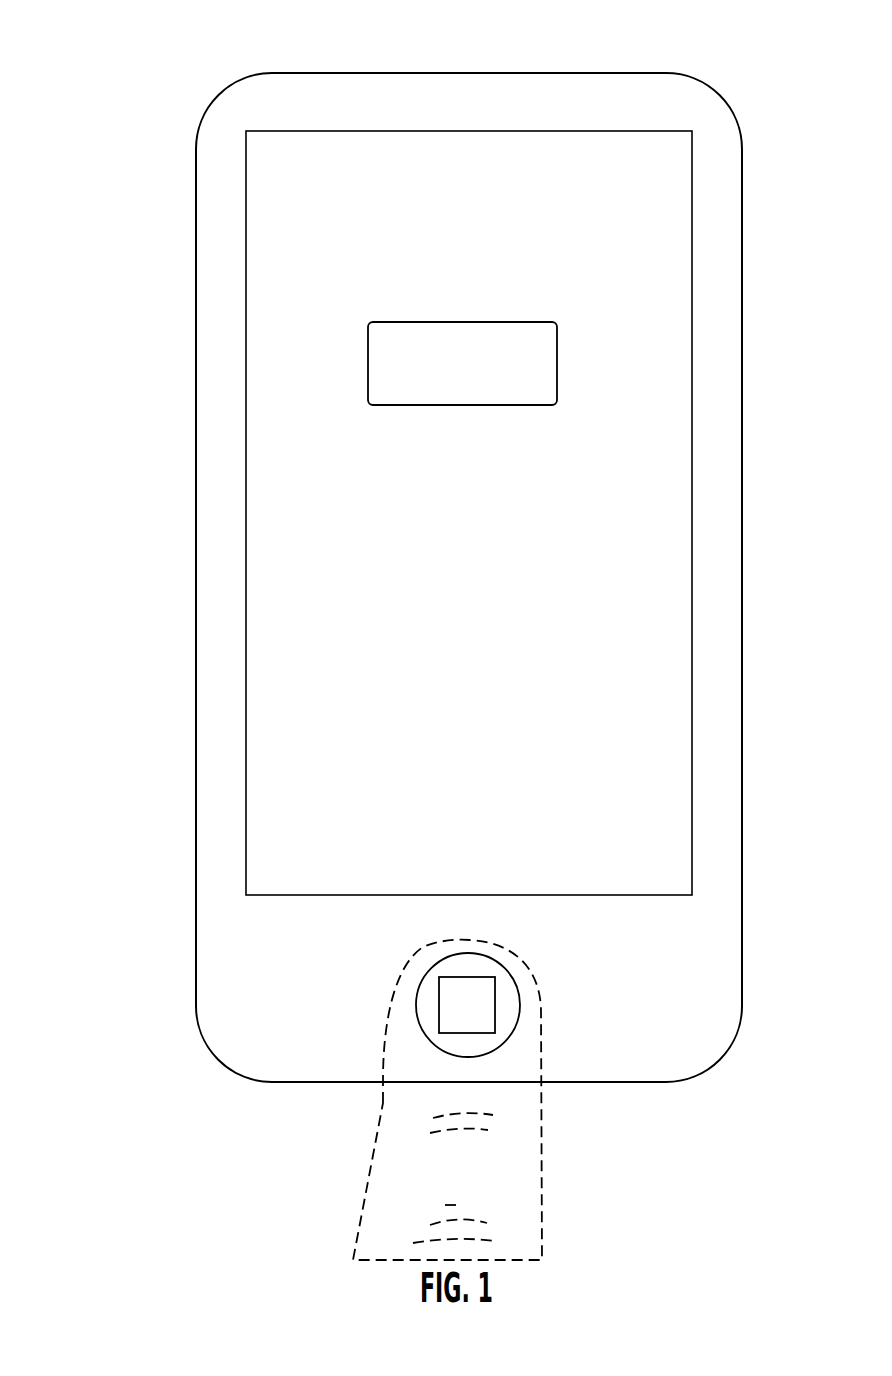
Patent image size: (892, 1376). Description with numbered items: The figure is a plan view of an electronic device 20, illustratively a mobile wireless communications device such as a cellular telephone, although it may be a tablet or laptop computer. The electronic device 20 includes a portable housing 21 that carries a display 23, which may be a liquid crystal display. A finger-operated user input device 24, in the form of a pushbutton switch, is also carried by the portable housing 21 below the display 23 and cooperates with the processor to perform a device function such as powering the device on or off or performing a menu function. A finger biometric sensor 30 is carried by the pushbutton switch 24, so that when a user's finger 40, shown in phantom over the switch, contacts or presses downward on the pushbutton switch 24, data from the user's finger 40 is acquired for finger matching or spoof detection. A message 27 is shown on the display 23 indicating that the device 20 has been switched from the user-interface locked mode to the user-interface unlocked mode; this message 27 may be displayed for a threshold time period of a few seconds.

The electronic device 20 is at (168, 60).
The portable housing 21 is at (196, 280).
The display 23 is at (245, 398).
The finger-operated user input device 24 is at (517, 985).
The message 27 is at (532, 322).
The finger biometric sensor 30 is at (483, 1033).
The user's finger 40 is at (383, 1103).